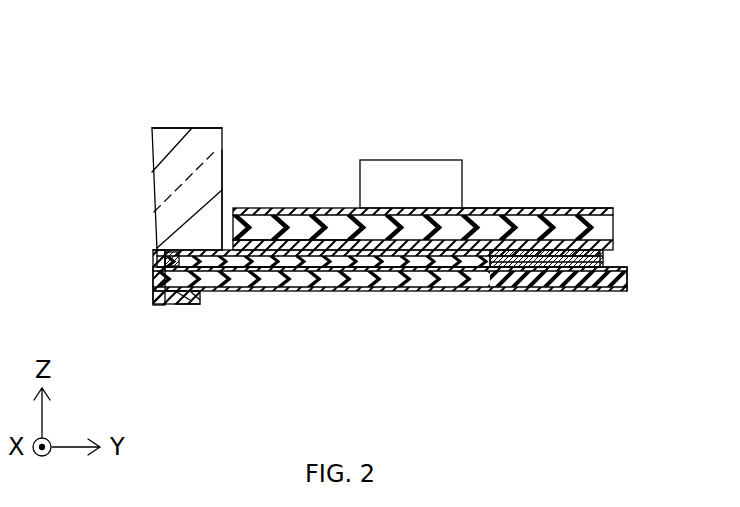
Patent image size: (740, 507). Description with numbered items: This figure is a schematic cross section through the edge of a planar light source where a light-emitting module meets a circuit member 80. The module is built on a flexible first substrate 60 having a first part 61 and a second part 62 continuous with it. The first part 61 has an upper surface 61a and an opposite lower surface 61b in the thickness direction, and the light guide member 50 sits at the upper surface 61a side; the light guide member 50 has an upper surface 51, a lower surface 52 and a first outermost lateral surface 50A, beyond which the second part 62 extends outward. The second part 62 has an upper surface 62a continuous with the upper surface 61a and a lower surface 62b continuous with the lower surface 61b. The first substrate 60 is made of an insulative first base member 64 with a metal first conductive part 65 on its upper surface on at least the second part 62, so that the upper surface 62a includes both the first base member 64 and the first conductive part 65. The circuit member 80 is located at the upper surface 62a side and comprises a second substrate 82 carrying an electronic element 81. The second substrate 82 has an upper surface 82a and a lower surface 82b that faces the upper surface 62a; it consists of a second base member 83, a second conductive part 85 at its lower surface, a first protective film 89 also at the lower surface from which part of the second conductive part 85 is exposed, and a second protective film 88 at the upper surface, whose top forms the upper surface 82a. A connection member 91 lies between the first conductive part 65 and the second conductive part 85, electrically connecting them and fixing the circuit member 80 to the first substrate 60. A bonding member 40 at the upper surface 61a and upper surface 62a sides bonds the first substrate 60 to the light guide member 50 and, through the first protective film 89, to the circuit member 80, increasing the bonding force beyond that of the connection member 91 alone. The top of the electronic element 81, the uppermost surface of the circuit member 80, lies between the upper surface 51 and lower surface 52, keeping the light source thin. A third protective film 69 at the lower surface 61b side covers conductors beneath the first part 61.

The bonding member 40 is at (158, 258).
The light guide member 50 is at (163, 181).
The first outermost lateral surface 50A is at (223, 185).
The upper surface of the light guide member 51 is at (178, 127).
The lower surface of the light guide member 52 is at (183, 268).
The first substrate 60 is at (431, 235).
The first part 61 is at (170, 197).
The upper surface of the first part 61a is at (186, 258).
The lower surface of the first part 61b is at (163, 303).
The second part 62 is at (445, 280).
The upper surface of the second part 62a is at (299, 252).
The lower surface of the second part 62b is at (299, 268).
The first base member 64 is at (603, 276).
The first conductive part 65 is at (513, 265).
The third protective film 69 is at (197, 297).
The circuit member 80 is at (465, 210).
The electronic element 81 is at (412, 175).
The second substrate 82 is at (465, 240).
The upper surface of the second substrate 82a is at (534, 218).
The lower surface of the second substrate 82b is at (324, 251).
The second base member 83 is at (584, 214).
The second conductive part 85 is at (562, 256).
The second protective film 88 is at (483, 212).
The first protective film 89 is at (338, 245).
The connection member 91 is at (543, 258).